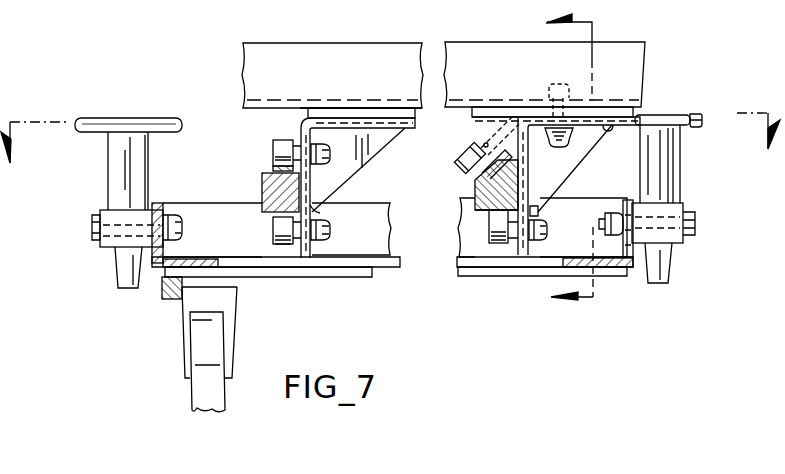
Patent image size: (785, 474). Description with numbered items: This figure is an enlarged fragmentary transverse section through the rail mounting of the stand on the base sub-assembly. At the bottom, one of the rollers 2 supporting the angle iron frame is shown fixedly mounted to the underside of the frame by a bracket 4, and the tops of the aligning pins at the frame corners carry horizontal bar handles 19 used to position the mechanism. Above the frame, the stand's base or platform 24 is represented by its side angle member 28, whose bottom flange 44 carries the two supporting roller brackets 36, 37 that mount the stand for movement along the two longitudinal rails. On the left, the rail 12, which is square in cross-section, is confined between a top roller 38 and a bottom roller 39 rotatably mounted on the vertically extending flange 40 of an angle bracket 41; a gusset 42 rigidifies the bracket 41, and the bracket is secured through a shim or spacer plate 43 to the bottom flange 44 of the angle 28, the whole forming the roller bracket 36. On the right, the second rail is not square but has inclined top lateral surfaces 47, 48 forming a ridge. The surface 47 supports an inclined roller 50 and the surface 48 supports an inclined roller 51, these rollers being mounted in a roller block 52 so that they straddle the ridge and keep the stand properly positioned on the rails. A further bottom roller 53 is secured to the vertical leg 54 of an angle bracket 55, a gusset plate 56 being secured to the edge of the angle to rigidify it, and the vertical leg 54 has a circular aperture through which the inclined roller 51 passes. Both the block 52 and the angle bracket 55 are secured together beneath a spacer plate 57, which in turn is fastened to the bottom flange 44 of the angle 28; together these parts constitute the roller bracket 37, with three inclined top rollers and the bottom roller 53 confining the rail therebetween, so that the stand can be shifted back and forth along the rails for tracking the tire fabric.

The rollers 2 is at (206, 392).
The brackets 4 is at (184, 324).
The rail 12 is at (264, 186).
The horizontal bar handles 19 is at (698, 124).
The base or platform 24 is at (386, 55).
The side angle member 28 is at (632, 76).
The supporting roller bracket 36 is at (253, 138).
The supporting roller bracket 37 is at (434, 157).
The top roller 38 is at (283, 153).
The bottom roller 39 is at (283, 234).
The vertically extending flange 40 is at (313, 212).
The angle bracket 41 is at (302, 130).
The gusset 42 is at (344, 173).
The shim or spacer plate 43 is at (328, 112).
The bottom flange 44 is at (373, 100).
The inclined top lateral surface 47 is at (474, 178).
The inclined top lateral surface 48 is at (476, 196).
The inclined roller 50 is at (459, 147).
The inclined roller 51 is at (528, 156).
The roller block 52 is at (480, 118).
The bottom roller 53 is at (497, 246).
The vertical leg 54 is at (540, 210).
The angle bracket 55 is at (606, 128).
The gusset plate 56 is at (565, 175).
The spacer plate 57 is at (512, 112).